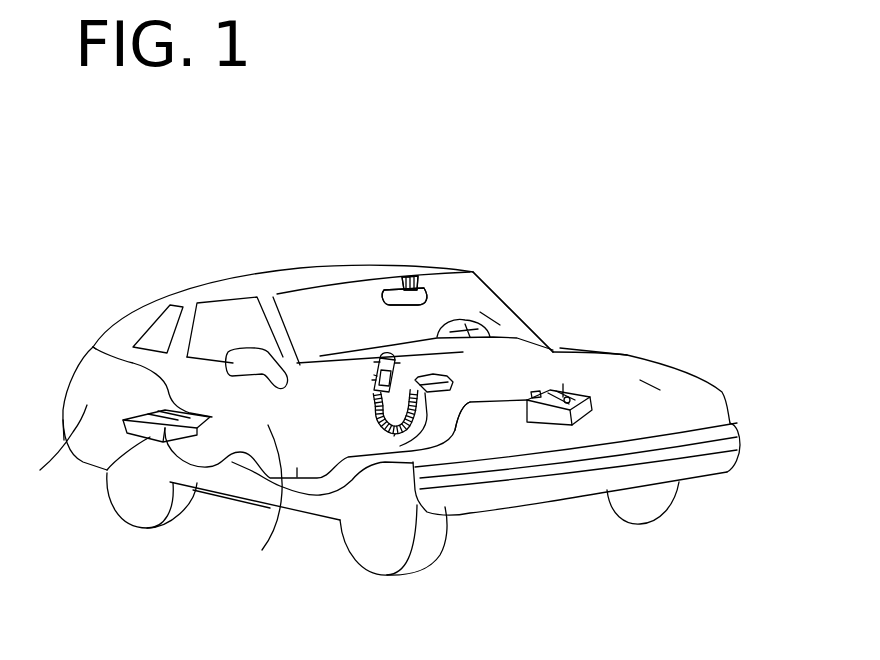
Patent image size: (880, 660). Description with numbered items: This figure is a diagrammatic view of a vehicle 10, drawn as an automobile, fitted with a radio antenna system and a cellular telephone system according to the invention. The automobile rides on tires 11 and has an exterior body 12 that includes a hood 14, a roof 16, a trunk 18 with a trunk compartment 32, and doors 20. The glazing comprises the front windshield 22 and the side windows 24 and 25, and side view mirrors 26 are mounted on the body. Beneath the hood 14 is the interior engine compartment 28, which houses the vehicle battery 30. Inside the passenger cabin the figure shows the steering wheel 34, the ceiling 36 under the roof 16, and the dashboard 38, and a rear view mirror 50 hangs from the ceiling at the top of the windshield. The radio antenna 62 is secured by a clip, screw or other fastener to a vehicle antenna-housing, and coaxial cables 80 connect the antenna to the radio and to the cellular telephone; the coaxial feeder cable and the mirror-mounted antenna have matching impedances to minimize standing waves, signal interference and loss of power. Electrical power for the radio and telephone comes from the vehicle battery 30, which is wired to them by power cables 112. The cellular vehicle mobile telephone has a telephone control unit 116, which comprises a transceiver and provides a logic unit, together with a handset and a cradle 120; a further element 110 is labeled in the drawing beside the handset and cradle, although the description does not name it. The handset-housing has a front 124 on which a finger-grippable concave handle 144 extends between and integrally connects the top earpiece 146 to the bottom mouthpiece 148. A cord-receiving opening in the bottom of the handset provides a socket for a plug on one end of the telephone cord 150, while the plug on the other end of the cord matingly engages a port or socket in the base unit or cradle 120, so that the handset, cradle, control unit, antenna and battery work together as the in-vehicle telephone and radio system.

The vehicle 10 is at (727, 397).
The tires 11 is at (447, 543).
The exterior body 12 is at (63, 394).
The hood 14 is at (617, 352).
The roof 16 is at (290, 263).
The trunk 18 is at (88, 350).
The doors 20 is at (262, 550).
The front windshield 22 is at (333, 300).
The side window 24 is at (167, 305).
The side window 25 is at (210, 300).
The side view mirrors 26 is at (243, 357).
The interior engine compartment 28 is at (650, 388).
The vehicle battery 30 is at (593, 417).
The trunk compartment 32 is at (44, 467).
The steering wheel 34 is at (473, 323).
The ceiling 36 is at (463, 287).
The dashboard 38 is at (517, 337).
The rear view mirror 50 is at (420, 283).
The radio antenna 62 is at (397, 297).
The coaxial cables 80 is at (422, 276).
The handset connector 110 is at (400, 365).
The power cables 112 is at (483, 410).
The telephone control unit 116 is at (152, 436).
The cradle 120 is at (455, 377).
The front 124 is at (375, 380).
The finger-grippable concave handle 144 is at (380, 365).
The top earpiece 146 is at (388, 345).
The bottom mouthpiece 148 is at (372, 412).
The telephone cord 150 is at (395, 434).